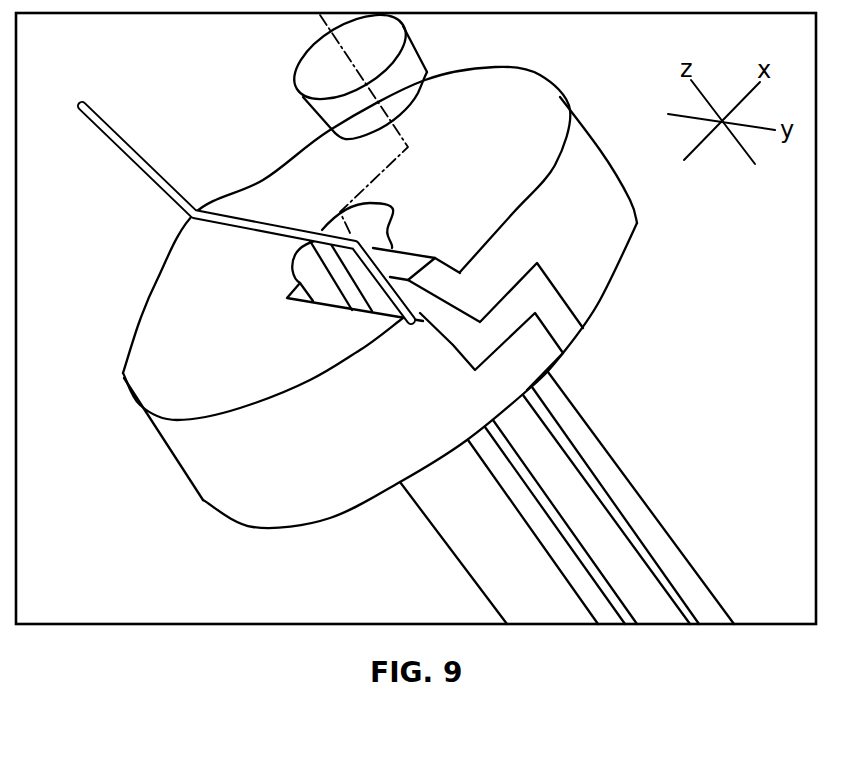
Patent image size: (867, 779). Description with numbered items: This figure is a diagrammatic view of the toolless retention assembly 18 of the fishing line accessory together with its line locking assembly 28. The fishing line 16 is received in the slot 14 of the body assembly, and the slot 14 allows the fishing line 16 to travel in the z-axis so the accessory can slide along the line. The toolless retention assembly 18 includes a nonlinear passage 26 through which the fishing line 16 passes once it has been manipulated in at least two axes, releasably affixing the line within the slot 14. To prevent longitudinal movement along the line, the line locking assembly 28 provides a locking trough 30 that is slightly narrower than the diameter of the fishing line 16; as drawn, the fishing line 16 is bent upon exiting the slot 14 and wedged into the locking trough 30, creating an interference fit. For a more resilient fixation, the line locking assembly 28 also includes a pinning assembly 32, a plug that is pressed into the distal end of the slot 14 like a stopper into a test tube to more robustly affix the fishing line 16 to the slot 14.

The slot 14 is at (630, 568).
The fishing line 16 is at (153, 163).
The toolless retention assembly 18 is at (233, 473).
The nonlinear passage 26 is at (553, 322).
The line locking assembly 28 is at (339, 131).
The locking trough 30 is at (240, 228).
The pinning assembly 32 is at (400, 72).